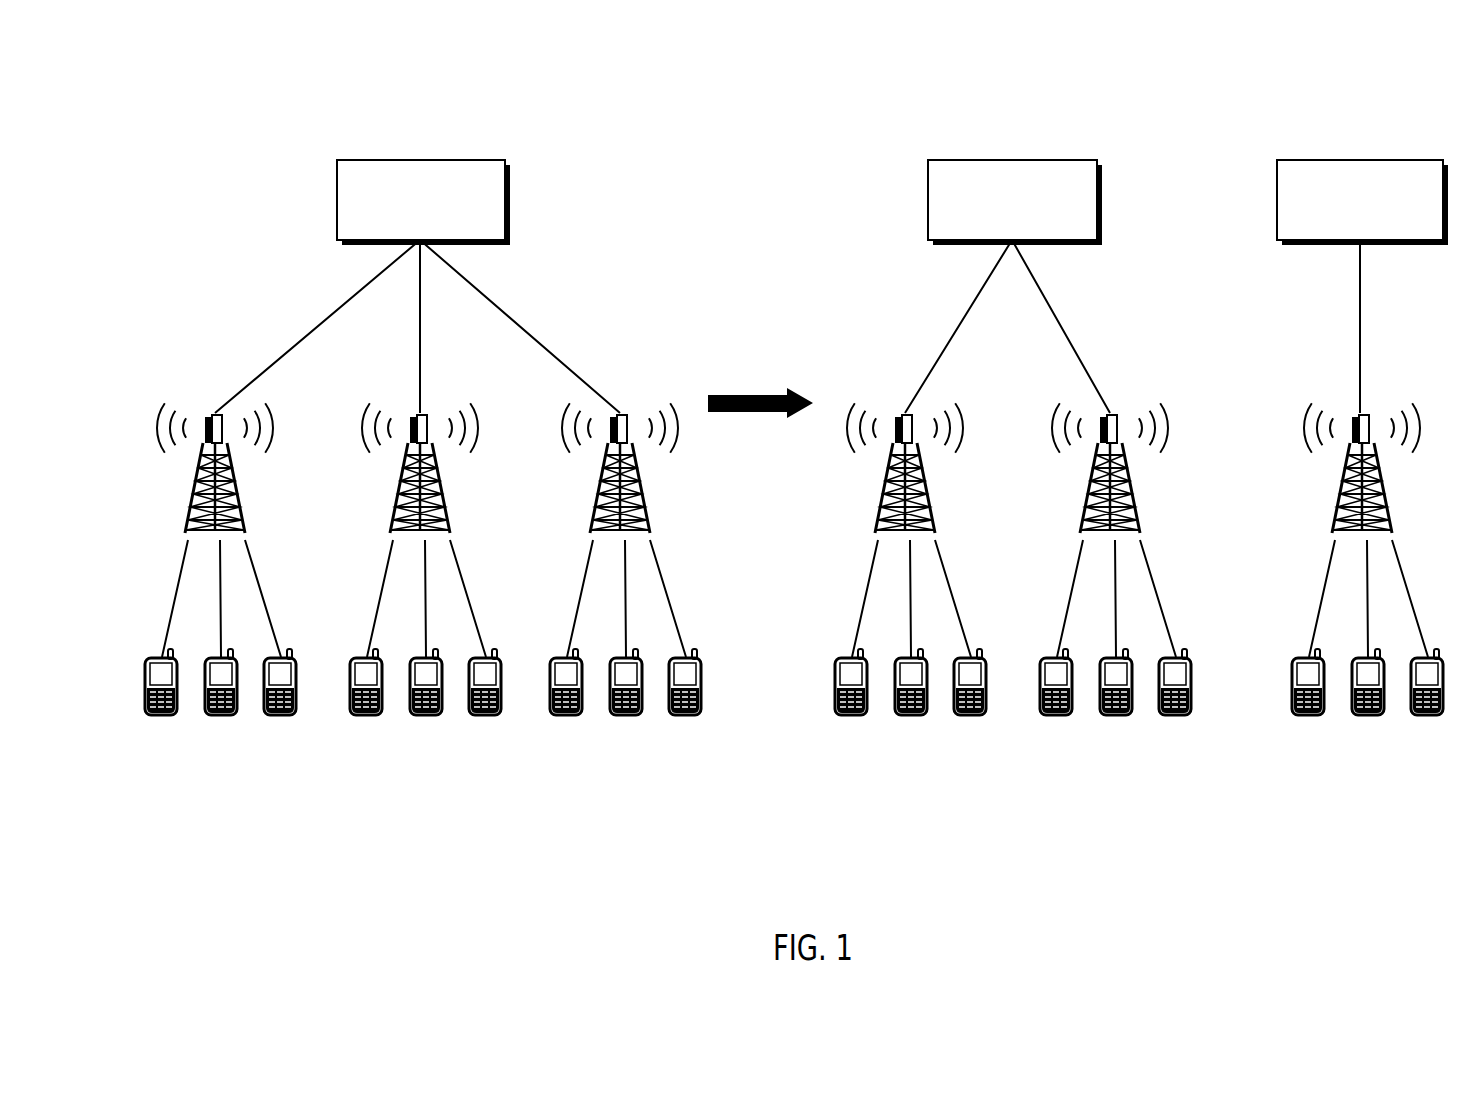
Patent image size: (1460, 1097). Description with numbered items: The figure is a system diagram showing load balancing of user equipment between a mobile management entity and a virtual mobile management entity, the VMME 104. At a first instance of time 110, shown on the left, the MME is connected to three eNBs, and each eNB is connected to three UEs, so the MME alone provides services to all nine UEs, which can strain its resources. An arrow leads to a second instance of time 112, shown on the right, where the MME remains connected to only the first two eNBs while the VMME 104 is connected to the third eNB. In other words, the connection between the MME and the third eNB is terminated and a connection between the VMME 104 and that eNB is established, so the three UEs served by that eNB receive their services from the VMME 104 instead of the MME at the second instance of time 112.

The VMME 104 is at (1313, 158).
The first instance of time 110 is at (327, 65).
The second instance of time 112 is at (927, 65).